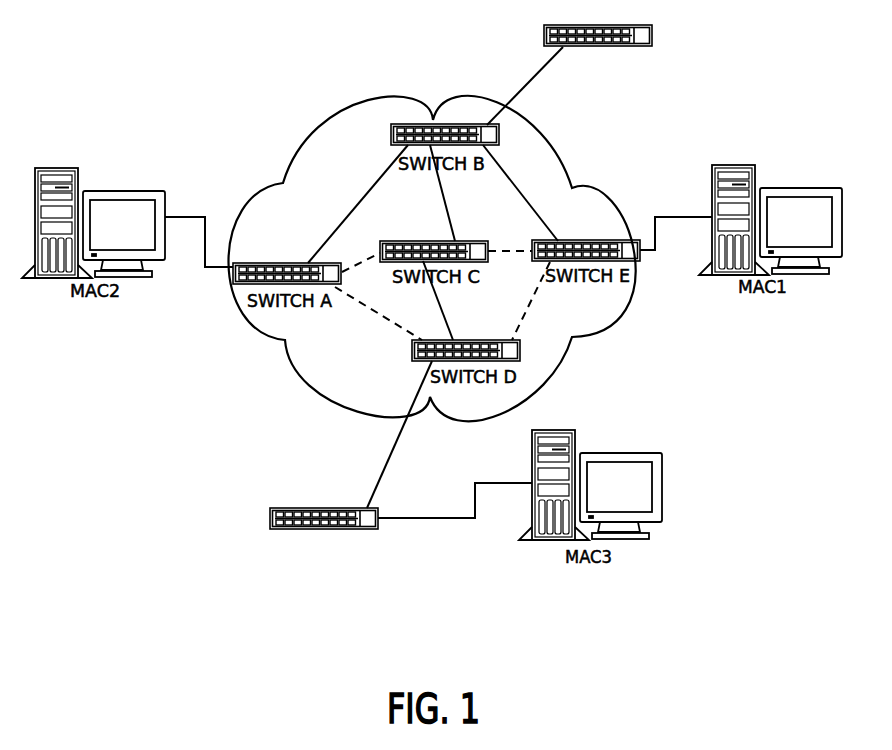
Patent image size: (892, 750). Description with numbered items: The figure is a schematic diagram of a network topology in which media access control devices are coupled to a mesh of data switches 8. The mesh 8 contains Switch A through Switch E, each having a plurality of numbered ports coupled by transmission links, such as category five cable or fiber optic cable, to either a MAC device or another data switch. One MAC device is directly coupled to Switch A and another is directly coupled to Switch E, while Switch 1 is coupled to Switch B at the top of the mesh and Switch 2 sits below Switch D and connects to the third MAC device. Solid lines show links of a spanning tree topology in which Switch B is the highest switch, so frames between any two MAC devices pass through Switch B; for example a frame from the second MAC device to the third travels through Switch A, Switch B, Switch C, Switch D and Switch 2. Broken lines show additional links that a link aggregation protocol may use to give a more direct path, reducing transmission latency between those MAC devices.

The mesh of data switches 8 is at (560, 152).
The Switch 1 is at (569, 75).
The Switch 2 is at (351, 457).